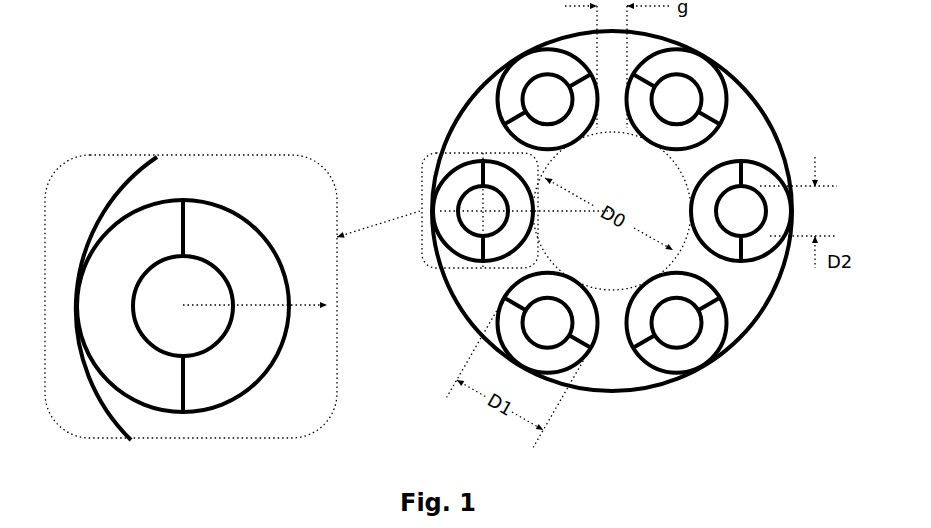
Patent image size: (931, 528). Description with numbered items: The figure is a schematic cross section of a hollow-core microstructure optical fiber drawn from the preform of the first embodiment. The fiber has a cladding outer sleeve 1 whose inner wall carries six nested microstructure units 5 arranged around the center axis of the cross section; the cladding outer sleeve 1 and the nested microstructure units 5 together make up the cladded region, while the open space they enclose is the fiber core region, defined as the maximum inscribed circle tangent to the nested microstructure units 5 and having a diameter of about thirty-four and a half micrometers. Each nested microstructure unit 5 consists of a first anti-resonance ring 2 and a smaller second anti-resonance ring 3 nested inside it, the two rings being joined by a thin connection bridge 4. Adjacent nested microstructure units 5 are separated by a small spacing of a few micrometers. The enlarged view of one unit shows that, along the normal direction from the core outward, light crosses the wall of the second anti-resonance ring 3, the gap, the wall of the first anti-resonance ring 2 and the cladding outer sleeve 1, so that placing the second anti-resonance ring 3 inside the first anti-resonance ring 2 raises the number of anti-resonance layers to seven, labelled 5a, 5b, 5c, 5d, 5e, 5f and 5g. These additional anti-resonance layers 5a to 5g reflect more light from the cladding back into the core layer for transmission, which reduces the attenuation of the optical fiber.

The cladding outer sleeve 1 is at (442, 226).
The first anti-resonance ring 2 is at (490, 75).
The second anti-resonance ring 3 is at (688, 77).
The connection bridge 4 is at (698, 302).
The nested microstructure unit 5 is at (420, 158).
The anti-resonance layer 5a is at (306, 294).
The anti-resonance layer 5b is at (278, 294).
The anti-resonance layer 5c is at (248, 294).
The anti-resonance layer 5d is at (211, 294).
The anti-resonance layer 5e is at (154, 294).
The anti-resonance layer 5f is at (121, 294).
The anti-resonance layer 5g is at (96, 294).